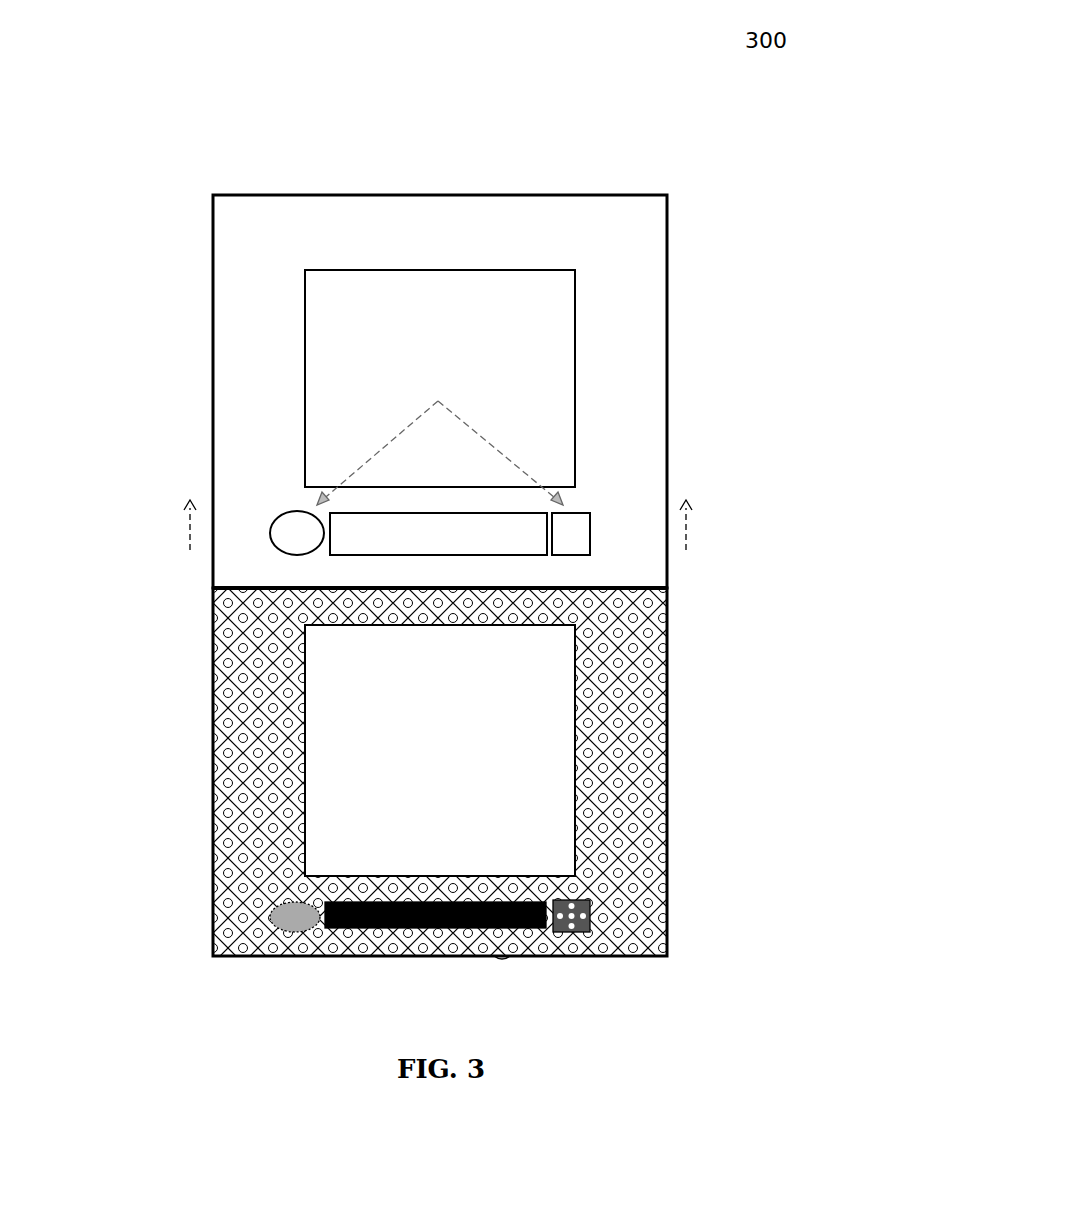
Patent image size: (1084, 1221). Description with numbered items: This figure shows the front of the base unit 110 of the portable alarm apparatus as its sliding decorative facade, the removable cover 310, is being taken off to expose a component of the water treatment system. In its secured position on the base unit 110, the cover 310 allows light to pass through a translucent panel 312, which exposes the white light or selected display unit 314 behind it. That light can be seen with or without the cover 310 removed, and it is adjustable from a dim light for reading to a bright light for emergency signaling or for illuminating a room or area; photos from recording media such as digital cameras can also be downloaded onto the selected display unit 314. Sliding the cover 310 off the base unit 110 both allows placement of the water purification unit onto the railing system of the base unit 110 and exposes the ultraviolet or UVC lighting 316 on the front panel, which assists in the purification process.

The base unit 110 is at (460, 561).
The removable cover 310 is at (556, 341).
The translucent panel 312 is at (438, 382).
The selected display unit 314 is at (545, 743).
The UVC lighting 316 is at (439, 773).